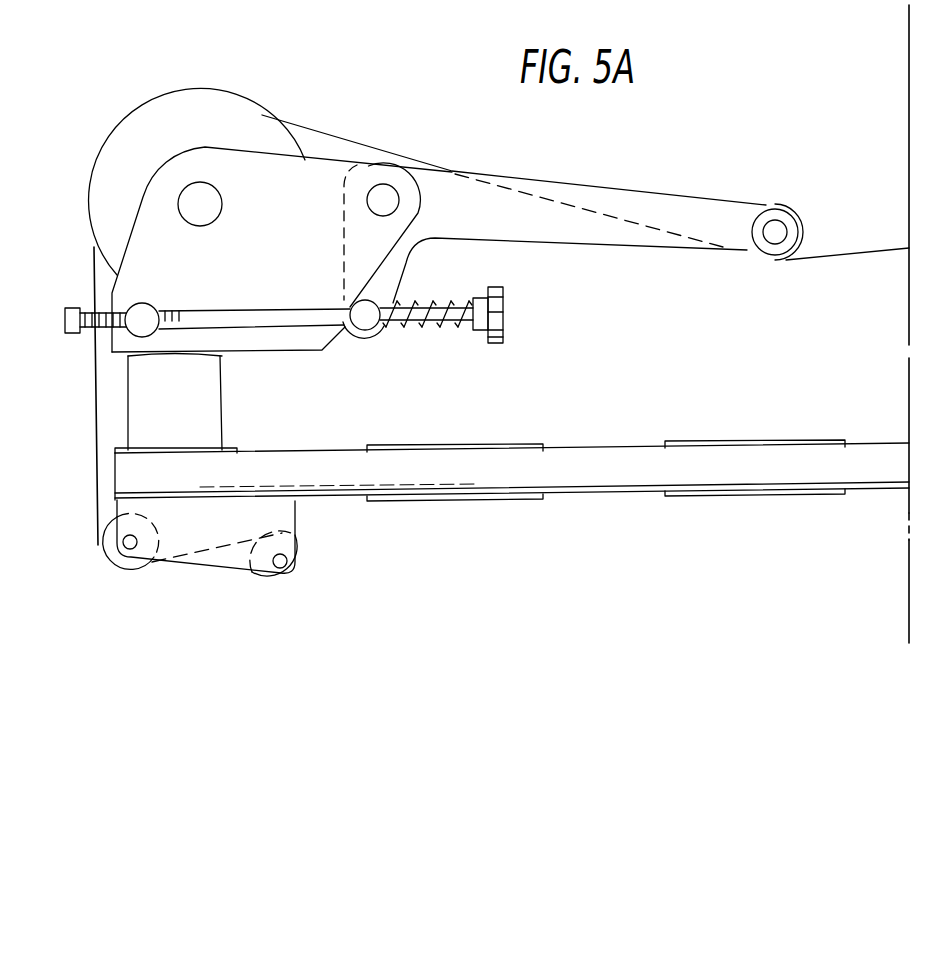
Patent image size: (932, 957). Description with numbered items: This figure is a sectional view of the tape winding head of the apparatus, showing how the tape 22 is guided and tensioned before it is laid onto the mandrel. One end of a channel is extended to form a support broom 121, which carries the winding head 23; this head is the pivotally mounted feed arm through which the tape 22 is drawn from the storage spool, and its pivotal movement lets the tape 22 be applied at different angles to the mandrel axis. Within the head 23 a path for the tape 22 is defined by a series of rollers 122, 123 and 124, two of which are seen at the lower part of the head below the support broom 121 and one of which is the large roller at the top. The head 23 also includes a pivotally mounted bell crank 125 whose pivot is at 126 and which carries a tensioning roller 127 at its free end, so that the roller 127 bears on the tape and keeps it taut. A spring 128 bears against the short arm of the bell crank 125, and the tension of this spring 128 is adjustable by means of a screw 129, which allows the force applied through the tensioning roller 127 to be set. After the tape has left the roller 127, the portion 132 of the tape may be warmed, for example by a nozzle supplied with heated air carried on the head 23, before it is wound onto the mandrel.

The tape 22 is at (310, 553).
The feed arm 23 is at (308, 183).
The support broom 121 is at (588, 472).
The roller 122 is at (270, 580).
The roller 123 is at (128, 560).
The roller 124 is at (198, 108).
The bell crank 125 is at (500, 210).
The pivot 126 is at (387, 198).
The tensioning roller 127 is at (793, 195).
The spring 128 is at (408, 325).
The screw 129 is at (501, 326).
The portion of the tape 132 is at (860, 250).